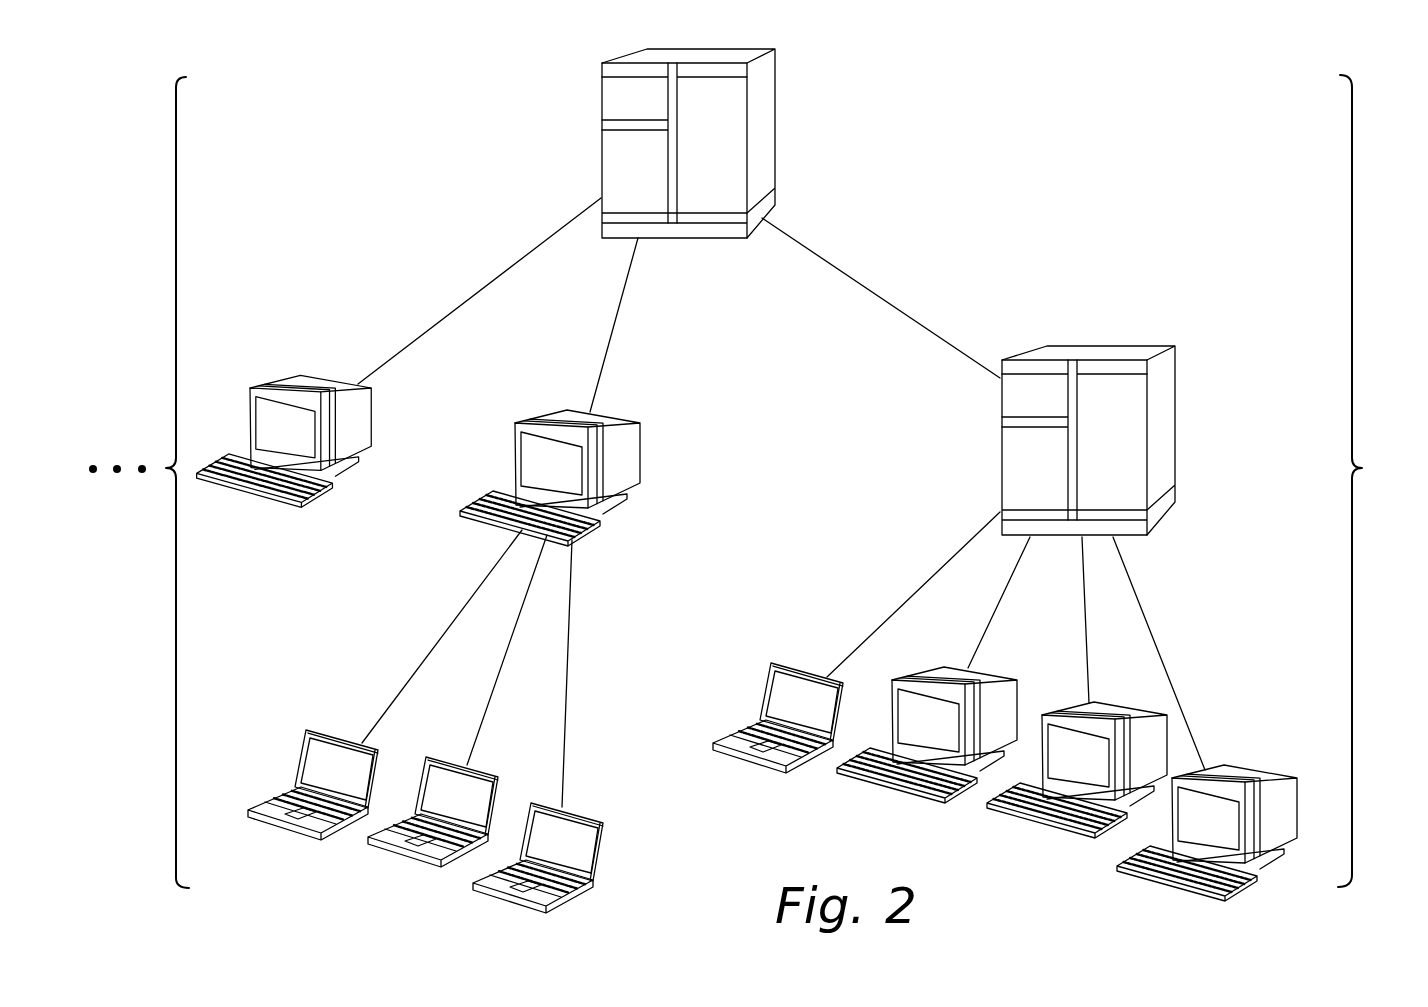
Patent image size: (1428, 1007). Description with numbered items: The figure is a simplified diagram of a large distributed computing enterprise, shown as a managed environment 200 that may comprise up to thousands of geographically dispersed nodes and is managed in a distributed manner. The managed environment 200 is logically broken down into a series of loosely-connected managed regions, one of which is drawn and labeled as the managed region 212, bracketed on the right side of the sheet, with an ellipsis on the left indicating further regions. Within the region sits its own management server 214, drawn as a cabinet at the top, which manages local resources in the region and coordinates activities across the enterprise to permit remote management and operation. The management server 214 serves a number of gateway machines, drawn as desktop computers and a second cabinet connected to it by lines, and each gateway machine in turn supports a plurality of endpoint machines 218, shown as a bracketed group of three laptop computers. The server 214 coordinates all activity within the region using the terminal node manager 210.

The managed environment 200 is at (963, 155).
The terminal node manager 210 is at (285, 695).
The managed region 212 is at (1352, 157).
The management server 214 is at (775, 127).
The endpoint machine 218 is at (620, 759).